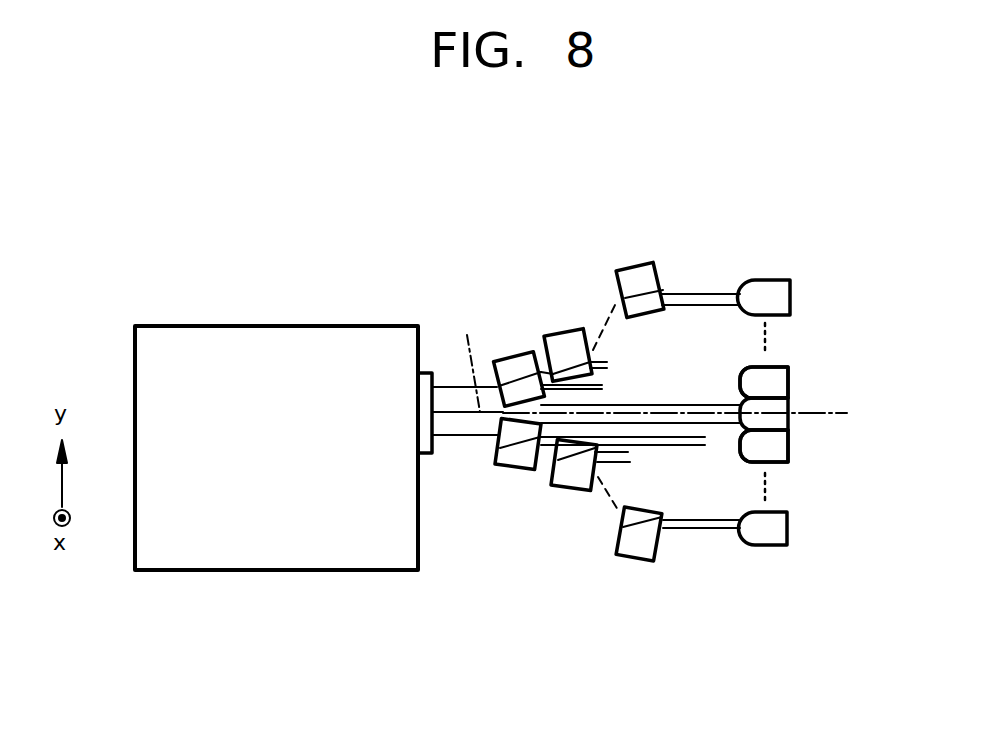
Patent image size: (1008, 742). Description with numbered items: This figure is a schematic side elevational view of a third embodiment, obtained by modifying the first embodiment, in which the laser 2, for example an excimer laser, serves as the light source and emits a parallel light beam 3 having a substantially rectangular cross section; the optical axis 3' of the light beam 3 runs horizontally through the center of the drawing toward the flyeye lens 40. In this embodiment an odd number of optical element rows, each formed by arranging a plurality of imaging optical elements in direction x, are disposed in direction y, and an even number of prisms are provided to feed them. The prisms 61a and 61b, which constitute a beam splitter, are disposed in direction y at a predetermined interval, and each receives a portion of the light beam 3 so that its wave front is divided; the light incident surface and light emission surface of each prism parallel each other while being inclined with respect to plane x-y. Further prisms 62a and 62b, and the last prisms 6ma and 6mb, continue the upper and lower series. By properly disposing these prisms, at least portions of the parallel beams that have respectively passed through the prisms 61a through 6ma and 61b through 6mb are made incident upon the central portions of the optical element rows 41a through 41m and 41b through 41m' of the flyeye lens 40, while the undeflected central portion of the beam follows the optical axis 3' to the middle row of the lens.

The laser 2 is at (327, 553).
The light beam 3 is at (639, 440).
The optical axis 3' is at (470, 359).
The prism 61a is at (522, 357).
The prism 61b is at (513, 457).
The prism 62a is at (577, 332).
The prism 62b is at (572, 472).
The prism 6ma is at (645, 262).
The prism 6mb is at (642, 547).
The flyeye lens 40 is at (780, 408).
The optical element row 41a is at (787, 360).
The optical element row 41b is at (780, 447).
The optical element row 41m is at (798, 297).
The optical element row 41m' is at (803, 526).